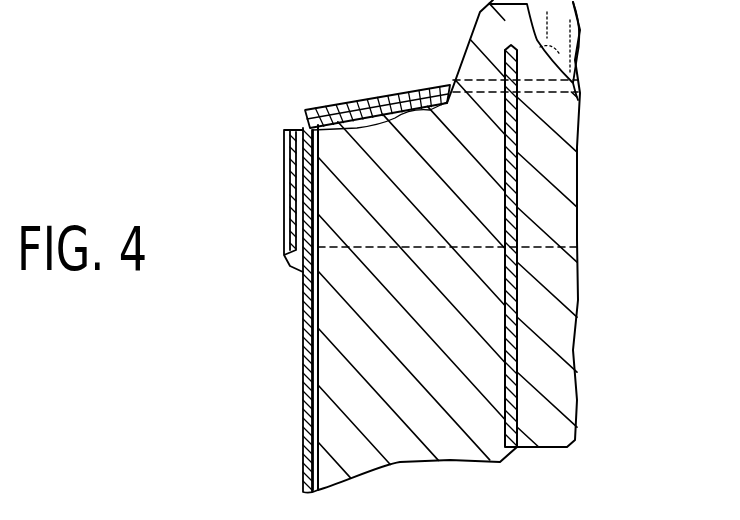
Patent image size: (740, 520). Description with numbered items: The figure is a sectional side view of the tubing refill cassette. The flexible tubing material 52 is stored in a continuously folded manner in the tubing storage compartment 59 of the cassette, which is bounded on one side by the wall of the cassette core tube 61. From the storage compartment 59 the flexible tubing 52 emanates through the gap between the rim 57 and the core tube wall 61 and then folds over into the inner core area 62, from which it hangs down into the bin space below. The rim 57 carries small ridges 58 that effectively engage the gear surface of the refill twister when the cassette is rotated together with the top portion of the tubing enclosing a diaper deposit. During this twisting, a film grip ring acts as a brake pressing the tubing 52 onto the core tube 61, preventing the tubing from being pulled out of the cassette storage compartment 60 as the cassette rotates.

The flexible tubing material 52 is at (576, 22).
The rim 57 is at (378, 100).
The small ridges 58 is at (327, 110).
The tubing storage compartment 59 is at (367, 293).
The storage compartment 60 is at (303, 392).
The cassette core tube wall 61 is at (531, 161).
The inner core area 62 is at (545, 312).